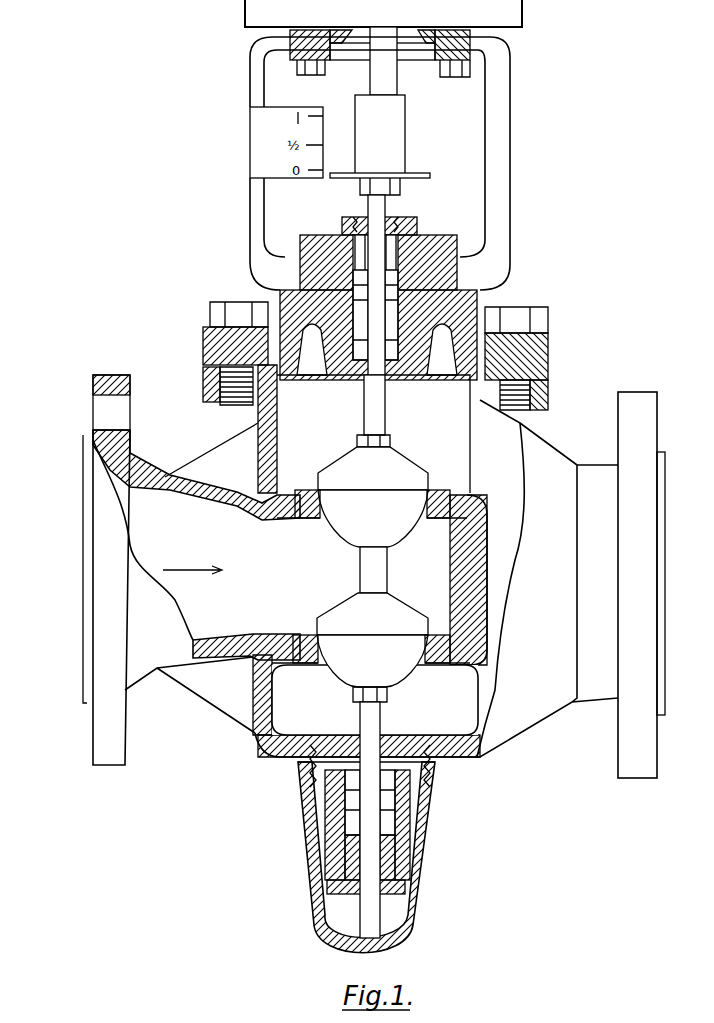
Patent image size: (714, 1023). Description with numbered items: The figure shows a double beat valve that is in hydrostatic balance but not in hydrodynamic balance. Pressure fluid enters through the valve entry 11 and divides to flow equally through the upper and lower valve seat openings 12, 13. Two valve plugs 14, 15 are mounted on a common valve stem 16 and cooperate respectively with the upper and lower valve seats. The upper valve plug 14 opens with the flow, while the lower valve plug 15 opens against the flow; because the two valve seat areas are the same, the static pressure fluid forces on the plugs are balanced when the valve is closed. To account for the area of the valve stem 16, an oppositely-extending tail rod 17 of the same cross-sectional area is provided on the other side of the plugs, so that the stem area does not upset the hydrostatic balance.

The valve entry 11 is at (162, 548).
The upper valve seat opening 12 is at (430, 515).
The lower valve seat opening 13 is at (415, 662).
The upper valve plug 14 is at (408, 470).
The lower valve plug 15 is at (425, 633).
The valve stem 16 is at (372, 410).
The tail rod 17 is at (373, 727).